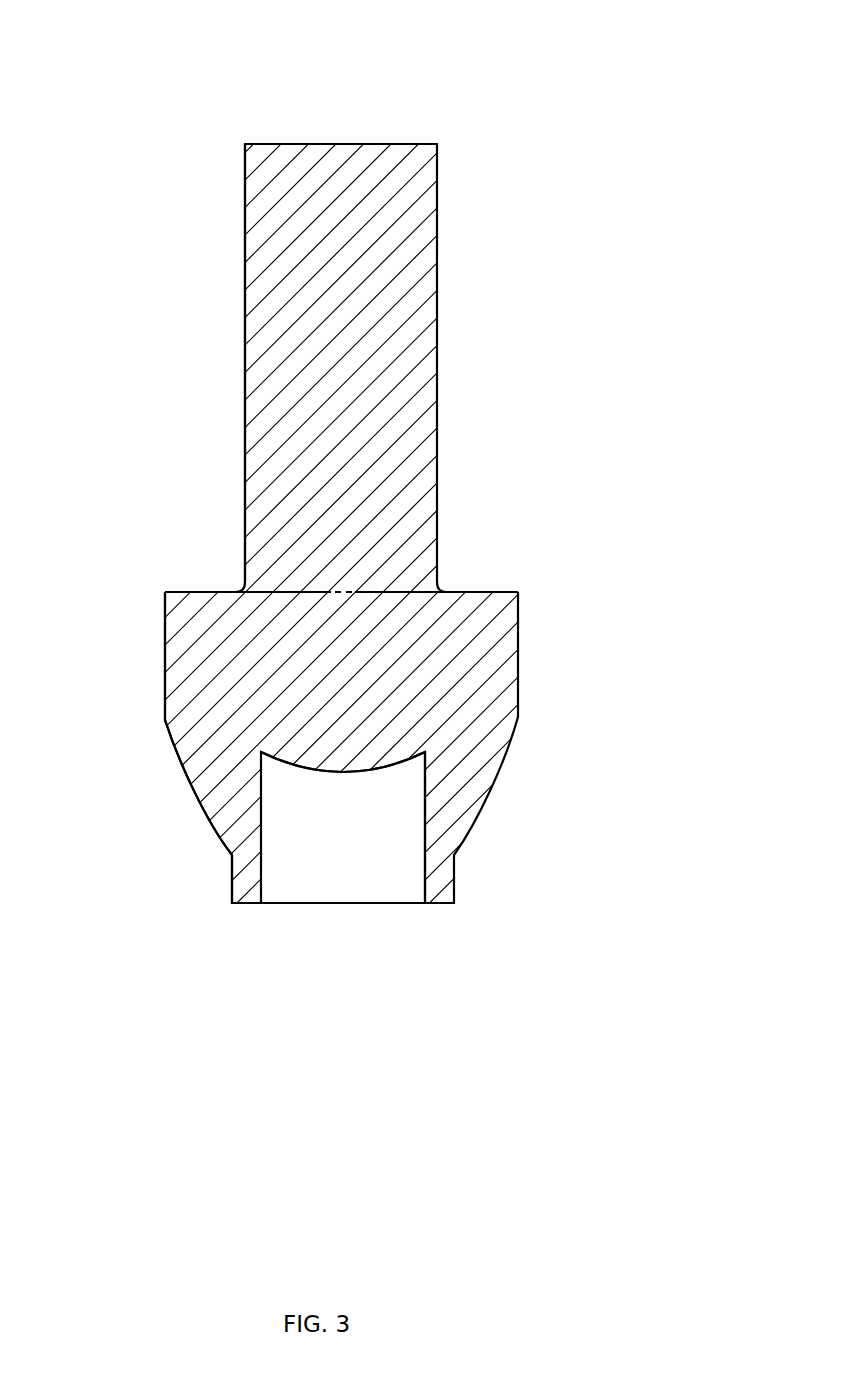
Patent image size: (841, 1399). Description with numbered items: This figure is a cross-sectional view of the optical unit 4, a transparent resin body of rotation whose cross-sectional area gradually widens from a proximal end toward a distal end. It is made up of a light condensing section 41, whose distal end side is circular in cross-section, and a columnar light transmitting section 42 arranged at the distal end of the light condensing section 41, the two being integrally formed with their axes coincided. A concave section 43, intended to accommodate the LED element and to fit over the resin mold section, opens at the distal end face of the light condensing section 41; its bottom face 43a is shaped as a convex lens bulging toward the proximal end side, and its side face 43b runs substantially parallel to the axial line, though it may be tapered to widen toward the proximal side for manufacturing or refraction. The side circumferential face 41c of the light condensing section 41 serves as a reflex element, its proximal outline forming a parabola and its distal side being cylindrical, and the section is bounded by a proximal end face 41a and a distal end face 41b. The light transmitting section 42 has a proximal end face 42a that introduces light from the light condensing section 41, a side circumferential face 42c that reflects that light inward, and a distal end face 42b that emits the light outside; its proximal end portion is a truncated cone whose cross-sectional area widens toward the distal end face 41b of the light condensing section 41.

The optical unit 4 is at (302, 113).
The light condensing section 41 is at (482, 728).
The proximal end face 41a is at (247, 905).
The distal end face 41b is at (165, 591).
The side circumferential face 41c is at (165, 718).
The light transmitting section 42 is at (403, 441).
The proximal end face 42a is at (300, 593).
The distal end face 42b is at (380, 144).
The side circumferential face 42c is at (245, 297).
The concave section 43 is at (363, 869).
The bottom face 43a is at (299, 772).
The side face 43b is at (420, 804).